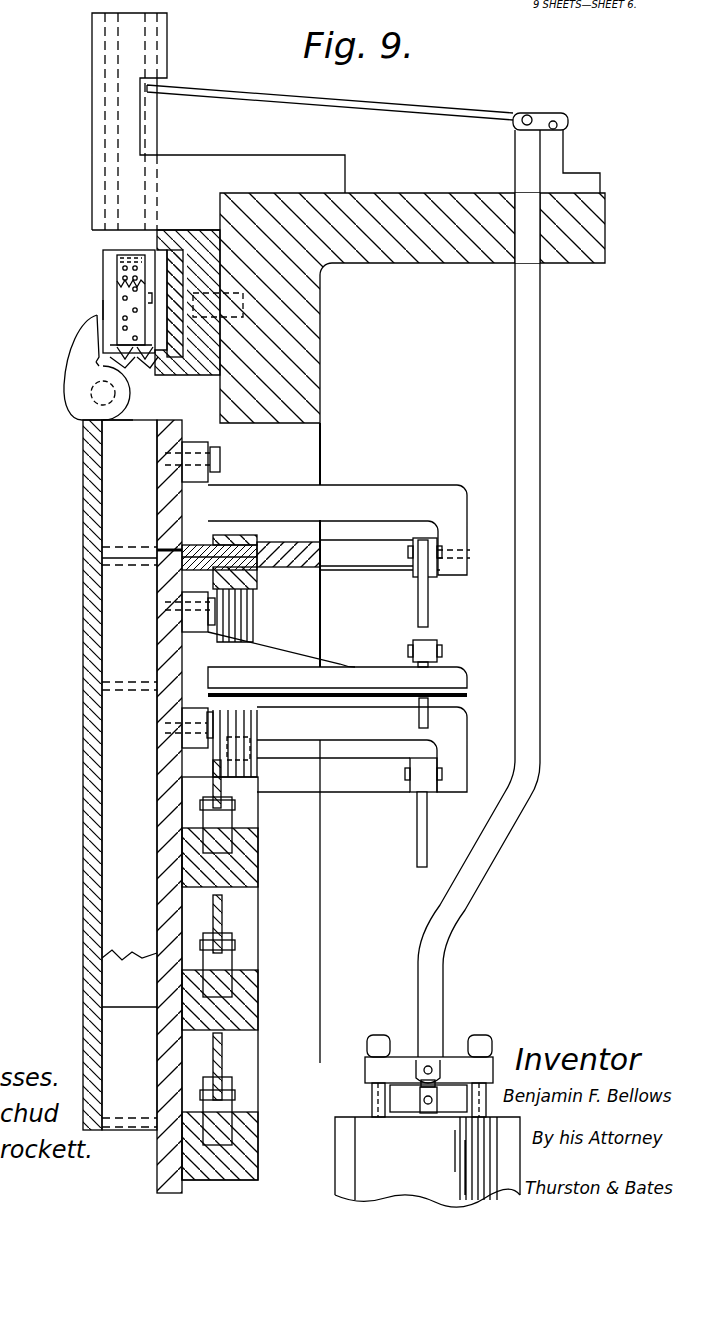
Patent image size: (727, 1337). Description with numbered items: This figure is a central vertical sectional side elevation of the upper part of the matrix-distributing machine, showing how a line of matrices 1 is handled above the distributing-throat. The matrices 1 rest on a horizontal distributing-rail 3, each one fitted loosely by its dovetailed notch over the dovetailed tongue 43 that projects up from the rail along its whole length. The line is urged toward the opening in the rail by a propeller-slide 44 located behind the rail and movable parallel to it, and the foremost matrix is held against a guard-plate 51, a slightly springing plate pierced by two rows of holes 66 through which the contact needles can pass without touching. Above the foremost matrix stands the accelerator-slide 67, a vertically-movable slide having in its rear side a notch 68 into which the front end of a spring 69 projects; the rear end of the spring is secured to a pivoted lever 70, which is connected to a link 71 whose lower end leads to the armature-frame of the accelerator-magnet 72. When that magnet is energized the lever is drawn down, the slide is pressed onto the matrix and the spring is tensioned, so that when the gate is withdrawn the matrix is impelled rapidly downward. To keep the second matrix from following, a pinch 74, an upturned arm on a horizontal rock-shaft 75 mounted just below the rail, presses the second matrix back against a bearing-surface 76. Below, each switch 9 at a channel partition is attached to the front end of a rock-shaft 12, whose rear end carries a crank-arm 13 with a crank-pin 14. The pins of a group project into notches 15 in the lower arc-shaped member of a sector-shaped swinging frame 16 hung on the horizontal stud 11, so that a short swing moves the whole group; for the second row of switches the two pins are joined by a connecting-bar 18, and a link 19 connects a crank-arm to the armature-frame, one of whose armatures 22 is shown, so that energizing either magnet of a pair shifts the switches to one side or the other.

The matrices 1 is at (107, 310).
The distributing-rail 3 is at (134, 370).
The switches 9 is at (120, 775).
The horizontal stud 11 is at (242, 542).
The rock-shaft 12 is at (157, 573).
The crank-arm 13 is at (418, 568).
The crank-pin 14 is at (440, 560).
The notches 15 is at (213, 806).
The swinging frame 16 is at (222, 928).
The connecting-bar 18 is at (440, 652).
The link 19 is at (430, 622).
The armature 22 is at (365, 1100).
The dovetailed tongue 43 is at (100, 357).
The propeller-slide 44 is at (175, 298).
The guard-plate 51 is at (117, 262).
The holes 66 is at (117, 284).
The accelerator-slide 67 is at (103, 252).
The notch 68 is at (152, 95).
The spring 69 is at (398, 116).
The pivoted lever 70 is at (523, 113).
The link 71 is at (530, 505).
The accelerator-magnet 72 is at (427, 1162).
The pinch 74 is at (97, 367).
The rock-shaft 75 is at (95, 400).
The bearing-surface 76 is at (165, 240).